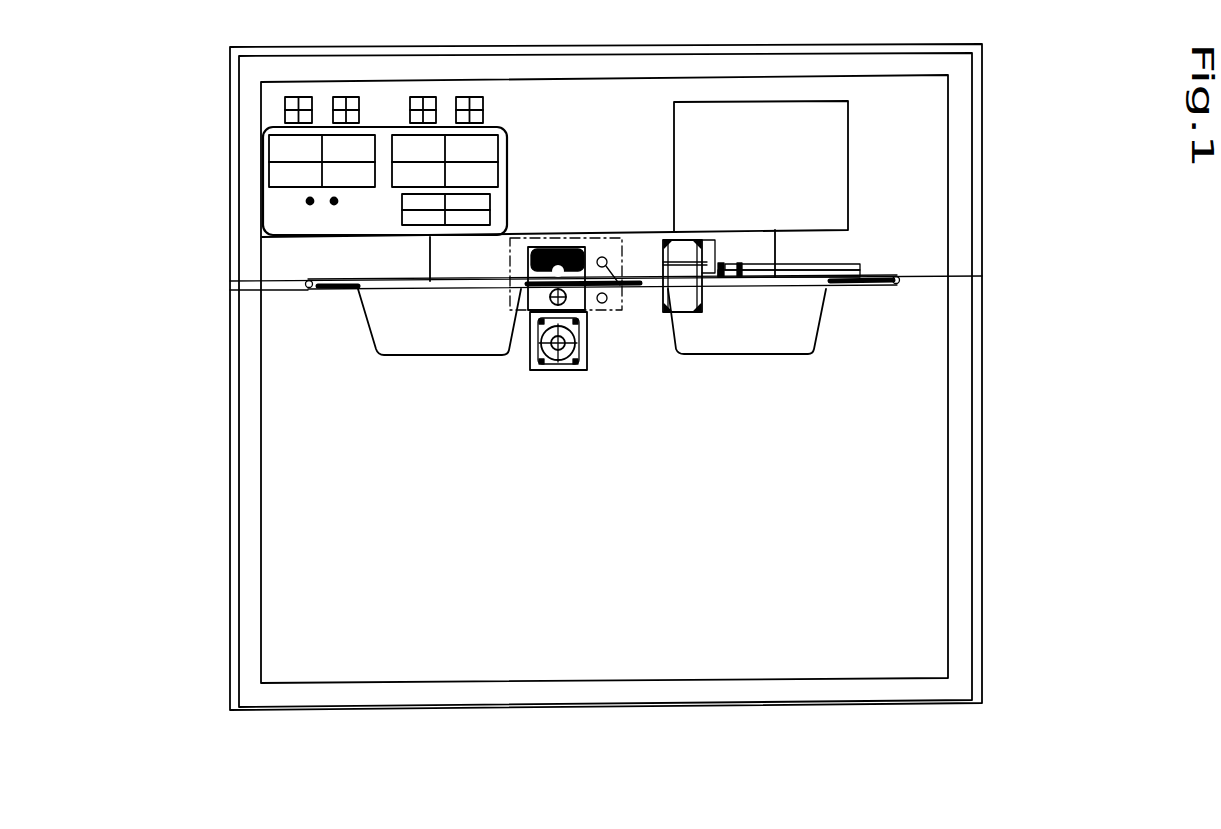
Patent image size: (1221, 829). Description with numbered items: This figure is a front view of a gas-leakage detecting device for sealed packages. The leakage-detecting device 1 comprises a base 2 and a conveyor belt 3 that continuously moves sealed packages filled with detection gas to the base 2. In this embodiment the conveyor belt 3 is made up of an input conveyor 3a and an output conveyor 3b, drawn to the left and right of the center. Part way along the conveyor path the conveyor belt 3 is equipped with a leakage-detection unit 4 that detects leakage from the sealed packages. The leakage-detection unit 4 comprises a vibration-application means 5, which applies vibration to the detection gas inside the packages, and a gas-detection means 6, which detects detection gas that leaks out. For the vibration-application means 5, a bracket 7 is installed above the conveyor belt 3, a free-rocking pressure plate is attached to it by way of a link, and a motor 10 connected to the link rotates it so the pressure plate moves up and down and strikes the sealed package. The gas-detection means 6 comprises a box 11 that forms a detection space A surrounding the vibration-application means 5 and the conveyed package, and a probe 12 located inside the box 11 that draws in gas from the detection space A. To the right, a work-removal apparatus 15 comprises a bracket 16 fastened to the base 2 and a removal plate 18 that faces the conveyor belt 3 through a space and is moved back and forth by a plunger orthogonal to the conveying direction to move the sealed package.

The leakage-detecting device 1 is at (228, 278).
The base 2 is at (228, 437).
The conveyor belt 3 is at (590, 369).
The input conveyor 3a is at (298, 291).
The output conveyor 3b is at (868, 289).
The leakage-detection unit 4 is at (553, 243).
The vibration-application means 5 is at (530, 307).
The gas-detection means 6 is at (679, 287).
The bracket 7 is at (539, 395).
The motor 10 is at (573, 371).
The box 11 is at (658, 394).
The probe 12 is at (604, 303).
The work-removal apparatus 15 is at (876, 312).
The bracket 16 is at (684, 302).
The removal plate 18 is at (732, 262).
The detection space A is at (520, 262).